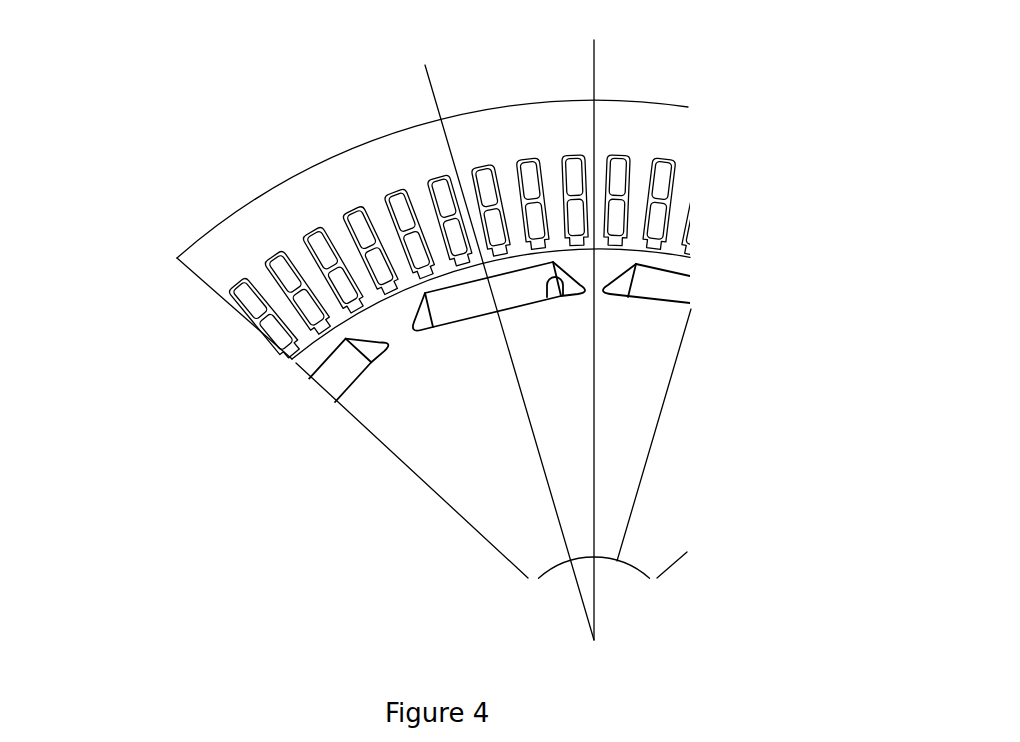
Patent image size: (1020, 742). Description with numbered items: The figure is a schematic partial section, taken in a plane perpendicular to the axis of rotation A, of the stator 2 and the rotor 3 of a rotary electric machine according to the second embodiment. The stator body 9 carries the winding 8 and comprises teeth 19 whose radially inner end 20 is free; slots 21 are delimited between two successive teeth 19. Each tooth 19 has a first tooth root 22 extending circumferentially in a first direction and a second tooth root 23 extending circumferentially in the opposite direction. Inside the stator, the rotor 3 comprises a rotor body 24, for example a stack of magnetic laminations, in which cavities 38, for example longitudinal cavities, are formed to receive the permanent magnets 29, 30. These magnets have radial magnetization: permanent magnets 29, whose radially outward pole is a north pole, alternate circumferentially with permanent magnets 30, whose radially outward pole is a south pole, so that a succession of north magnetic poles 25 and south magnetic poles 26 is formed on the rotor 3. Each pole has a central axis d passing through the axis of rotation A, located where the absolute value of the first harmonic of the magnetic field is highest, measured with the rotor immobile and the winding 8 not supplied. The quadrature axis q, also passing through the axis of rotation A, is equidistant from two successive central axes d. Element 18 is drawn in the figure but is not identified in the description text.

The stator 2 is at (440, 189).
The rotor 3 is at (435, 329).
The winding 8 is at (324, 250).
The stator body 9 is at (242, 218).
The rotor core 18 is at (518, 342).
The teeth 19 is at (640, 172).
The radially inner end 20 is at (632, 245).
The slots 21 is at (662, 195).
The first tooth root 22 is at (619, 237).
The second tooth root 23 is at (645, 292).
The rotor body 24 is at (453, 478).
The north magnetic pole 25 is at (488, 262).
The south magnetic pole 26 is at (305, 360).
The permanent magnets 29 is at (530, 293).
The permanent magnets 30 is at (332, 375).
The cavities 38 is at (560, 282).
The central axis d is at (440, 98).
The quadrature axis q is at (596, 76).
The axis of rotation A is at (692, 618).